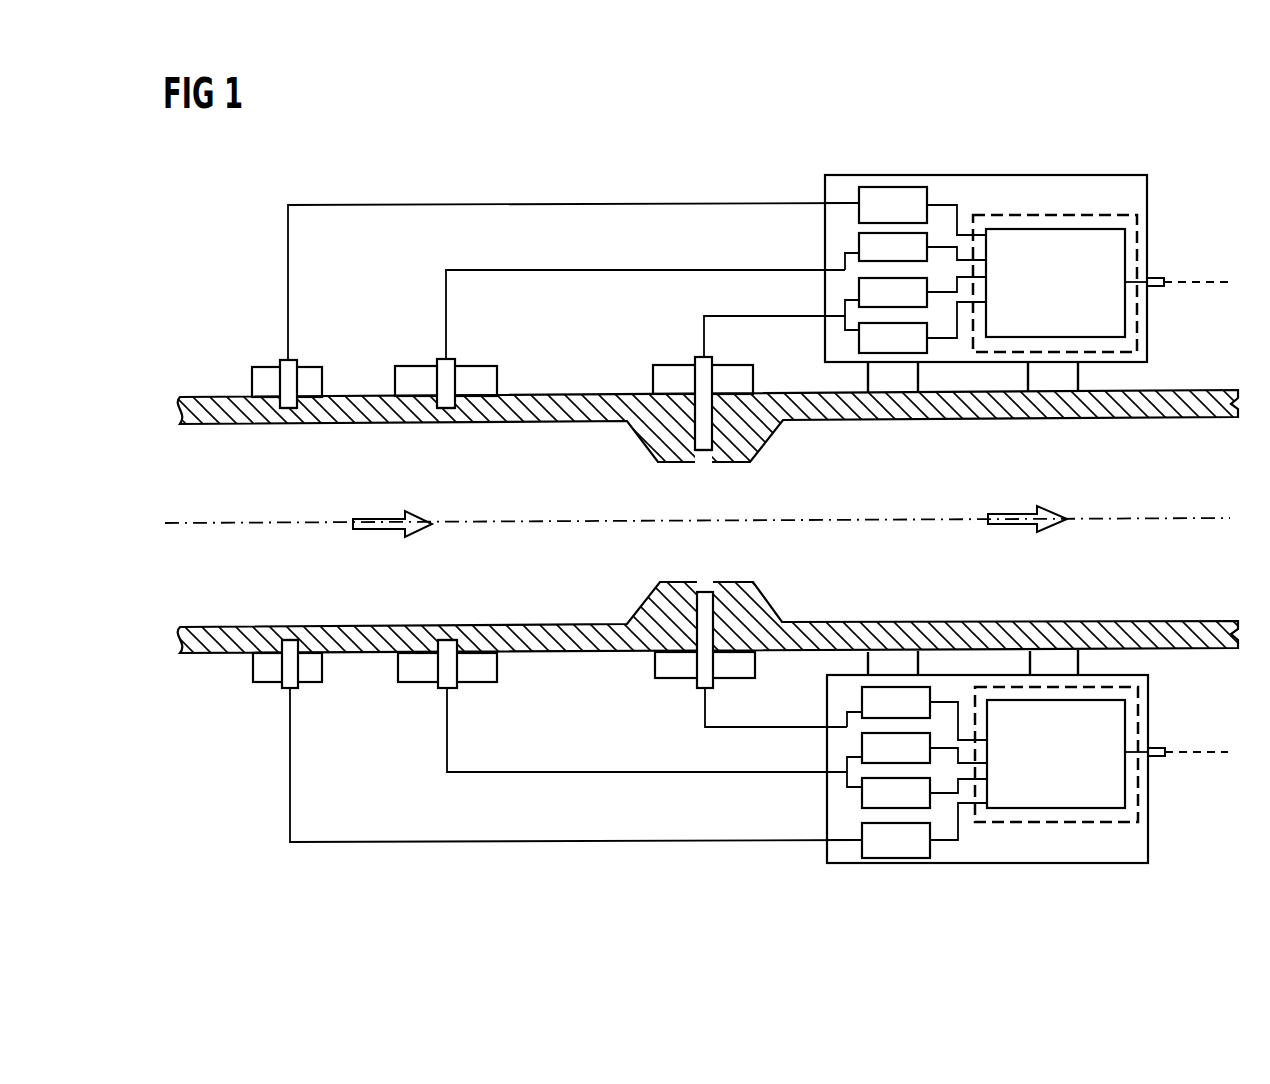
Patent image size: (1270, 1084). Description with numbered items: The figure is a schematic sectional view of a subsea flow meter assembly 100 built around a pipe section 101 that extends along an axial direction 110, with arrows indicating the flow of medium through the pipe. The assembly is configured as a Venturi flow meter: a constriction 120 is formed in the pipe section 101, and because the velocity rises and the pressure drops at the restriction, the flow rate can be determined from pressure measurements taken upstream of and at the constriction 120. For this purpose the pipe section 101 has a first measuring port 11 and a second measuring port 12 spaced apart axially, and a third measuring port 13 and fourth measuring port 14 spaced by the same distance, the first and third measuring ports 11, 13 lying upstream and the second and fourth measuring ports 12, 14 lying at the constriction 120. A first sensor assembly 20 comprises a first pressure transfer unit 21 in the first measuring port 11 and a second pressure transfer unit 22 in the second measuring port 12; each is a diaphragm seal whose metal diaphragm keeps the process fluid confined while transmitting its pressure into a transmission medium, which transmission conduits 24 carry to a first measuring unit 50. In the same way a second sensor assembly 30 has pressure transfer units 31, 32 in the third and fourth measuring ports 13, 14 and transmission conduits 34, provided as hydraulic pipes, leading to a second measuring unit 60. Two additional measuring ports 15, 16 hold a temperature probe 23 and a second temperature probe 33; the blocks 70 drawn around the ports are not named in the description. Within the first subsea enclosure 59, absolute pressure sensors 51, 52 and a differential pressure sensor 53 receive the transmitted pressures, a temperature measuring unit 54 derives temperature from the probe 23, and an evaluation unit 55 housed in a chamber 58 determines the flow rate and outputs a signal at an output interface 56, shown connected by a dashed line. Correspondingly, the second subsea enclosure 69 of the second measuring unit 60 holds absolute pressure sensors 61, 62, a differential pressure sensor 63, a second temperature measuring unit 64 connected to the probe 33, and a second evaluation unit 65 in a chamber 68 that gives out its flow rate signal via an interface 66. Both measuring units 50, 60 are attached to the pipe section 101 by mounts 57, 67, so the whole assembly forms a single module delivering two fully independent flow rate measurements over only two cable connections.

The subsea flow meter assembly 100 is at (232, 212).
The pipe section 101 is at (198, 397).
The axial direction 110 is at (1197, 518).
The constriction 120 is at (650, 602).
The first sensor assembly 20 is at (572, 195).
The second sensor assembly 30 is at (575, 850).
The sensor housing block 70 is at (308, 367).
The temperature probe 23 is at (282, 362).
The first pressure transfer unit 21 is at (437, 360).
The second pressure transfer unit 22 is at (699, 356).
The transmission conduits 24 is at (735, 316).
The additional measuring port 15 is at (287, 425).
The first measuring port 11 is at (446, 425).
The second measuring port 12 is at (704, 464).
The fourth measuring port 14 is at (705, 582).
The second temperature probe 33 is at (283, 690).
The pressure transfer unit 31 is at (440, 690).
The pressure transfer unit 32 is at (698, 690).
The transmission conduits 34 is at (733, 727).
The additional measuring port 16 is at (287, 632).
The third measuring port 13 is at (447, 632).
The first measuring unit 50 is at (1012, 283).
The absolute pressure sensor 51 is at (859, 247).
The absolute pressure sensor 52 is at (859, 338).
The differential pressure sensor 53 is at (859, 292).
The temperature measuring unit 54 is at (892, 187).
The evaluation unit 55 is at (1005, 229).
The output interface 56 is at (1160, 287).
The mount 57 is at (1028, 378).
The chamber 58 is at (1063, 215).
The subsea enclosure 59 is at (956, 175).
The second measuring unit 60 is at (1012, 759).
The absolute pressure sensor 61 is at (862, 797).
The absolute pressure sensor 62 is at (862, 708).
The differential pressure sensor 63 is at (862, 750).
The second temperature measuring unit 64 is at (893, 865).
The second evaluation unit 65 is at (1005, 822).
The interface 66 is at (1160, 748).
The mount 67 is at (1020, 663).
The chamber 68 is at (1068, 822).
The subsea enclosure 69 is at (965, 865).